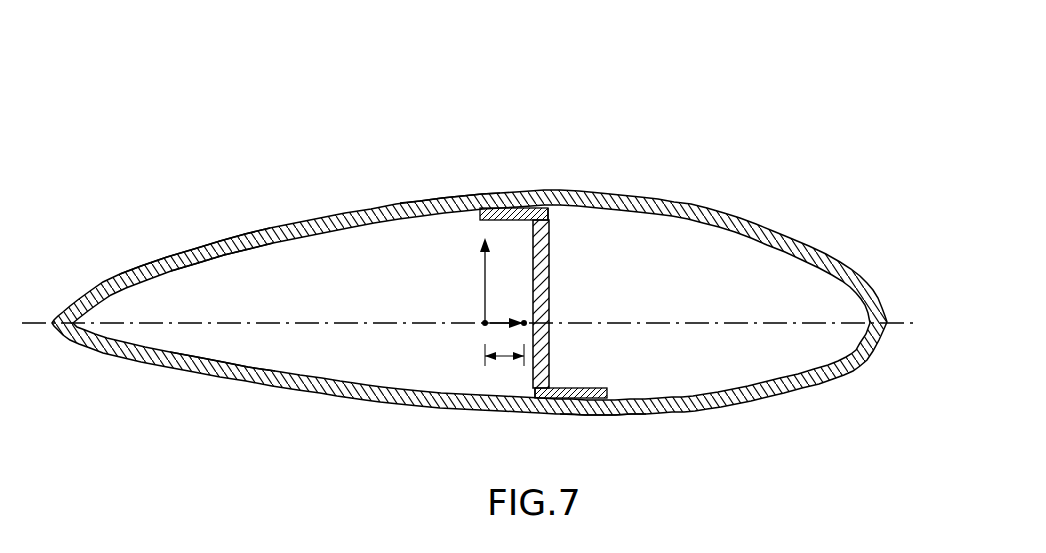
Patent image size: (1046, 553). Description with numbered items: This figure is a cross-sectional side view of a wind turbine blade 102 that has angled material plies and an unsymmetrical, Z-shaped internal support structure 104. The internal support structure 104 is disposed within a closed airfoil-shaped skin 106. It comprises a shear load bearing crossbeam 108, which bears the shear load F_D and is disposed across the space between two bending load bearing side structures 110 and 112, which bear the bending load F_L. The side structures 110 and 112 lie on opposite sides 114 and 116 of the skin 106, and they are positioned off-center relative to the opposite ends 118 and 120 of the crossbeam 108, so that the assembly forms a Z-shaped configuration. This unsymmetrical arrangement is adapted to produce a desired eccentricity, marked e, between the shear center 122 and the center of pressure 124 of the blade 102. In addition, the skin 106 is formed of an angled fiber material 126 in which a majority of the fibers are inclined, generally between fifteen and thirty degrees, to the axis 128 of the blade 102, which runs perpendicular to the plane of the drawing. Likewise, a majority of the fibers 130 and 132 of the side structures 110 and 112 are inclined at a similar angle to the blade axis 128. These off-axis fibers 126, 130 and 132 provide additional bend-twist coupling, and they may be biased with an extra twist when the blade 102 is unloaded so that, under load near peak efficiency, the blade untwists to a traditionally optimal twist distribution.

The blade 102 is at (730, 78).
The Z-shaped internal support structure 104 is at (522, 235).
The closed airfoil-shaped skin 106 is at (731, 218).
The shear load bearing crossbeam 108 is at (551, 232).
The bending load bearing side structure 110 is at (456, 196).
The bending load bearing side structure 112 is at (624, 398).
The side of the skin 114 is at (228, 273).
The side of the skin 116 is at (256, 349).
The end of the crossbeam 118 is at (566, 210).
The end of the crossbeam 120 is at (518, 396).
The shear center 122 is at (528, 320).
The center of pressure 124 is at (484, 326).
The angled fiber material 126 is at (255, 240).
The blade axis 128 is at (485, 323).
The angled fibers of the side structure 130 is at (514, 209).
The angled fibers of the side structure 132 is at (568, 388).